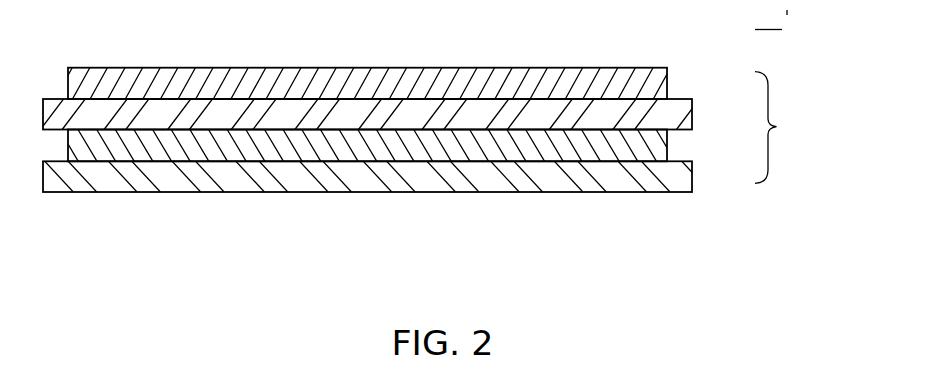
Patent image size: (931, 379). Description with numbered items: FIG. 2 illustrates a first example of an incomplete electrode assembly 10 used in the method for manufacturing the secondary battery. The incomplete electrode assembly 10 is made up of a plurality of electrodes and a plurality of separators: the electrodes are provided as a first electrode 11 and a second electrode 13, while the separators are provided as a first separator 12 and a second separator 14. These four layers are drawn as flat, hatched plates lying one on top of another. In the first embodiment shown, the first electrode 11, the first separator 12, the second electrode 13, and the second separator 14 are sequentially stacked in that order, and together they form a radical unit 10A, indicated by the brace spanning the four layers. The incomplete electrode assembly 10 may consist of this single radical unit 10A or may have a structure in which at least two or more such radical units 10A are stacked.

The incomplete electrode assembly 10 is at (771, 17).
The radical unit 10A is at (785, 128).
The first electrode 11 is at (667, 78).
The first separator 12 is at (692, 113).
The second electrode 13 is at (667, 143).
The second separator 14 is at (692, 173).